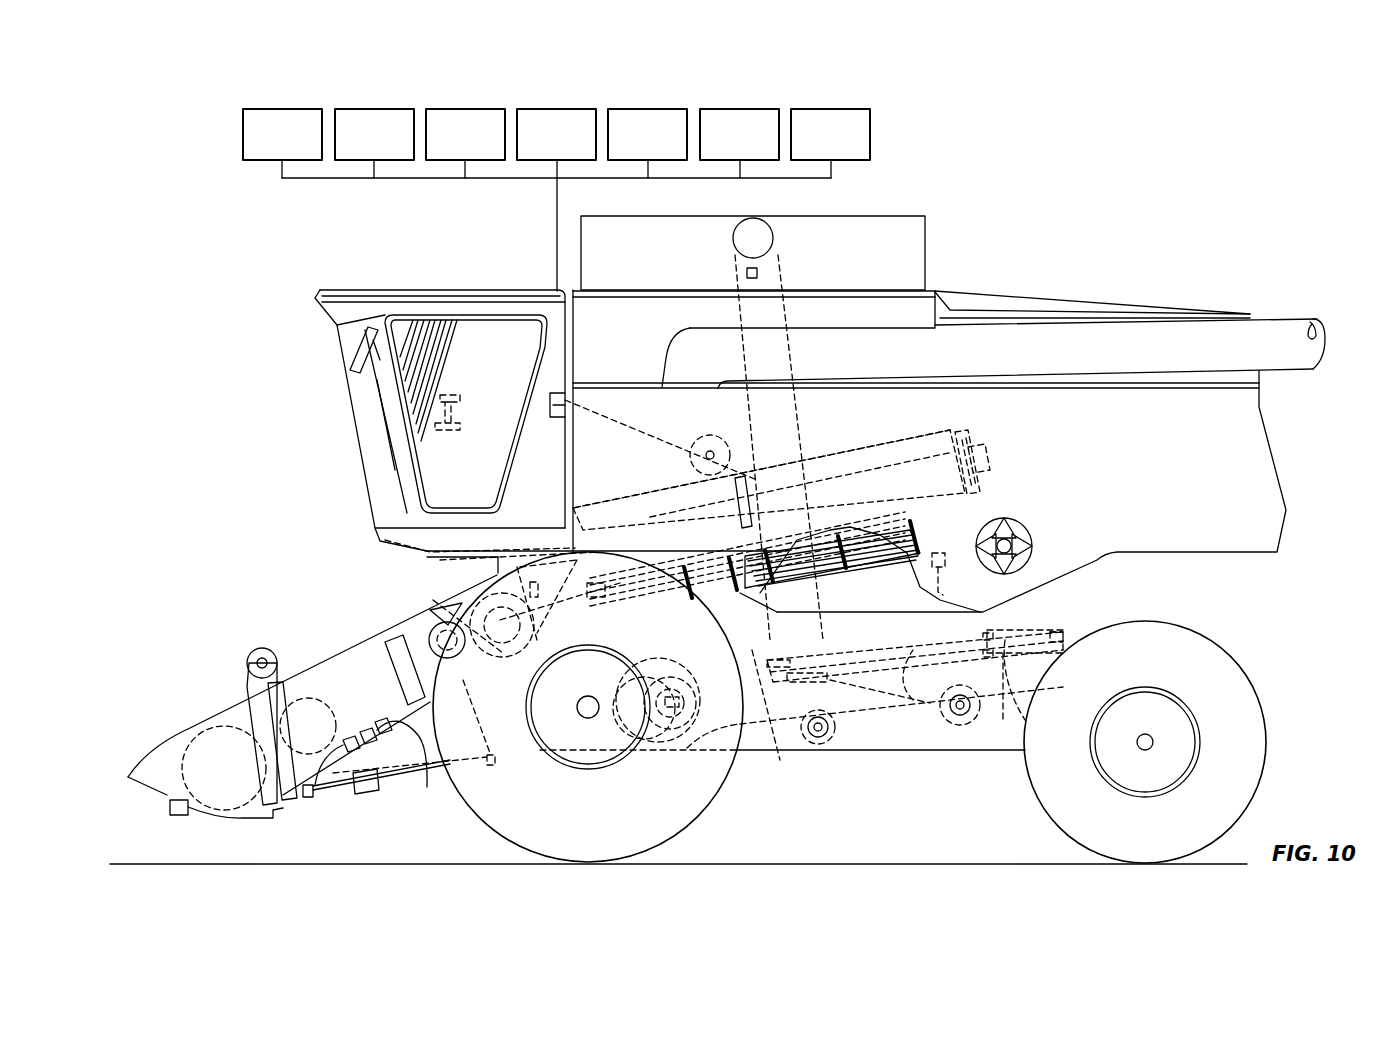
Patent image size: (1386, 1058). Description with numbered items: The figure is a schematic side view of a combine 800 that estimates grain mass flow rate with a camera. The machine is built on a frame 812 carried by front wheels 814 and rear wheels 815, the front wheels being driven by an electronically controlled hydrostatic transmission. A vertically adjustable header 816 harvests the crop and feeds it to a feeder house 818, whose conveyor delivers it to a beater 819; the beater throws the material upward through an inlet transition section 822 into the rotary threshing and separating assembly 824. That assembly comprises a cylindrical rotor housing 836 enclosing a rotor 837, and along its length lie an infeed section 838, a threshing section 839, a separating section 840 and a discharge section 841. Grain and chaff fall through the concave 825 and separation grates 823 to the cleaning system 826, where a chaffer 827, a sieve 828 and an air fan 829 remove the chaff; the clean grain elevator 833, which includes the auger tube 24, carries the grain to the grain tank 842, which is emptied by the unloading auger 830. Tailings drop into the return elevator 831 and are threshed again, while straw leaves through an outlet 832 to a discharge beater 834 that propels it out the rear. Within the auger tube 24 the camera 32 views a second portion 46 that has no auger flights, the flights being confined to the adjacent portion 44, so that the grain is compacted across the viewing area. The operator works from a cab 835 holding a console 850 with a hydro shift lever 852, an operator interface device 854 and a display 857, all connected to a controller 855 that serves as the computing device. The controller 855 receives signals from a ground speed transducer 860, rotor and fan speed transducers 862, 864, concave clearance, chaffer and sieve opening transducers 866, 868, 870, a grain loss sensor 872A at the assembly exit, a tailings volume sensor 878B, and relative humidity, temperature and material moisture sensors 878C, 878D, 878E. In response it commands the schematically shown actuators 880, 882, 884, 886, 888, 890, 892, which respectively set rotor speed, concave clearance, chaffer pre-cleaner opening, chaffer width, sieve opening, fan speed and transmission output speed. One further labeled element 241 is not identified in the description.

The combine 800 is at (1232, 194).
The frame 812 is at (1065, 620).
The front ground engaging wheels 814 is at (438, 610).
The rear ground engaging wheels 815 is at (1267, 723).
The header 816 is at (181, 705).
The feeder house 818 is at (358, 665).
The beater 819 is at (469, 592).
The inlet transition section 822 is at (420, 542).
The separation grates 823 is at (860, 562).
The rotary threshing and separating assembly 824 is at (656, 506).
The concave 825 is at (695, 620).
The cleaning system 826 is at (907, 640).
The chaffer 827 is at (1008, 639).
The sieve 828 is at (970, 717).
The air fan 829 is at (657, 741).
The unloading auger 830 is at (1254, 352).
The return elevator 831 is at (963, 727).
The outlet 832 is at (988, 480).
The clean grain elevator 833 is at (794, 376).
The discharge beater 834 is at (1036, 521).
The operator's cab 835 is at (440, 289).
The cylindrical rotor housing 836 is at (910, 425).
The rotor 837 is at (930, 451).
The infeed section 838 is at (538, 505).
The threshing section 839 is at (673, 468).
The separating section 840 is at (797, 450).
The discharge section 841 is at (965, 405).
The grain tank 842 is at (947, 311).
The operator's console 850 is at (500, 352).
The hydro shift lever 852 is at (442, 415).
The operator interface device 854 is at (445, 430).
The controller 855 is at (560, 398).
The display 857 is at (357, 353).
The ground speed transducer 860 is at (524, 667).
The rotor speed transducer 862 is at (624, 550).
The fan speed transducer 864 is at (660, 742).
The concave clearance transducer 866 is at (580, 644).
The chaffer opening transducer 868 is at (987, 630).
The sieve opening transducer 870 is at (1002, 655).
The grain loss sensor 872A is at (940, 593).
The tailings volume sensor 878B is at (913, 700).
The relative humidity sensor 878C is at (330, 787).
The temperature sensor 878D is at (378, 752).
The material moisture sensor 878E is at (423, 740).
The rotor speed actuator 880 is at (286, 108).
The concave clearance actuator 882 is at (378, 108).
The chaffer pre-cleaner actuator 884 is at (469, 108).
The chaffer opening actuator 886 is at (560, 108).
The sieve opening actuator 888 is at (651, 108).
The fan speed actuator 890 is at (743, 108).
The transmission speed actuator 892 is at (834, 108).
The auger tube 24 is at (787, 318).
The camera 32 is at (760, 273).
The portion of auger tube 44 is at (734, 327).
The second portion of auger tube 46 is at (728, 268).
The axle 241 is at (668, 724).